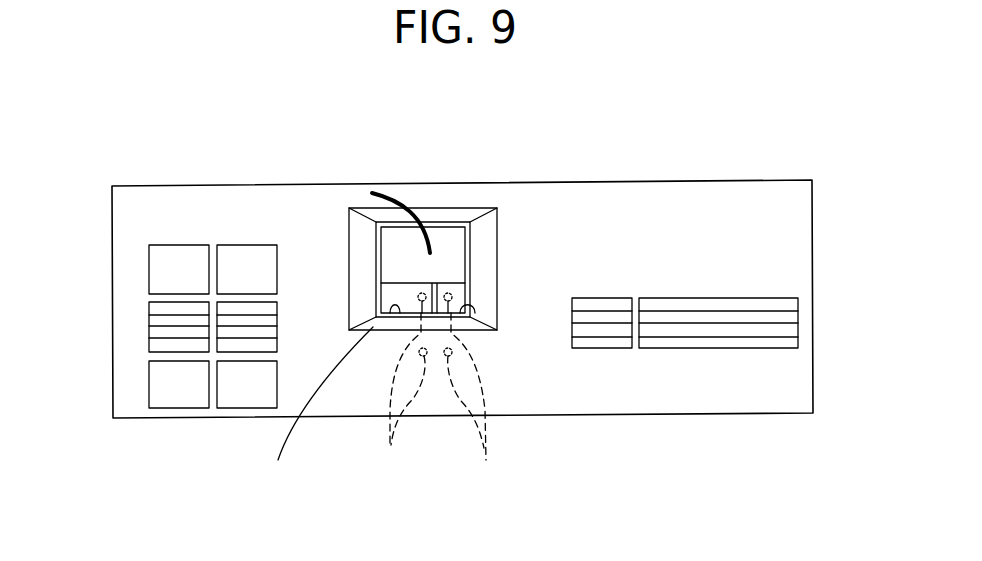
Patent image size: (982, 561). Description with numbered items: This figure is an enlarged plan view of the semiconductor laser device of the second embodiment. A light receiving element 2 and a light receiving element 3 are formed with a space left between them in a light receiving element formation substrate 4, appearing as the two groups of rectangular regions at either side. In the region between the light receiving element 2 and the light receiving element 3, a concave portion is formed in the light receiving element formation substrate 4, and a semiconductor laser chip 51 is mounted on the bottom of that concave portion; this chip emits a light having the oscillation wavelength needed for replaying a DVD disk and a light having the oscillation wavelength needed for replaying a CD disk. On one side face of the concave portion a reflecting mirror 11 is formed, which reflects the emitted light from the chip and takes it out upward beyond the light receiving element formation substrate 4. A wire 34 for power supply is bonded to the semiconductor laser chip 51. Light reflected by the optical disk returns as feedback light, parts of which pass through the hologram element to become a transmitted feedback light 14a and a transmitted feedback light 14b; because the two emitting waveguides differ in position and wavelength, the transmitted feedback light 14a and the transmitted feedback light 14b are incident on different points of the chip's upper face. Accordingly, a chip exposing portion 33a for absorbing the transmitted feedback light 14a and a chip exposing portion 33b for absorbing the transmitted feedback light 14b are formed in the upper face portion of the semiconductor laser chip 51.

The light receiving element 2 is at (798, 302).
The light receiving element 3 is at (150, 260).
The light receiving element formation substrate 4 is at (753, 180).
The reflecting mirror 11 is at (318, 412).
The transmitted feedback light 14a is at (397, 388).
The transmitted feedback light 14b is at (481, 395).
The chip exposing portion 33a is at (400, 313).
The chip exposing portion 33b is at (475, 313).
The wire 34 is at (385, 195).
The semiconductor laser chip 51 is at (455, 222).